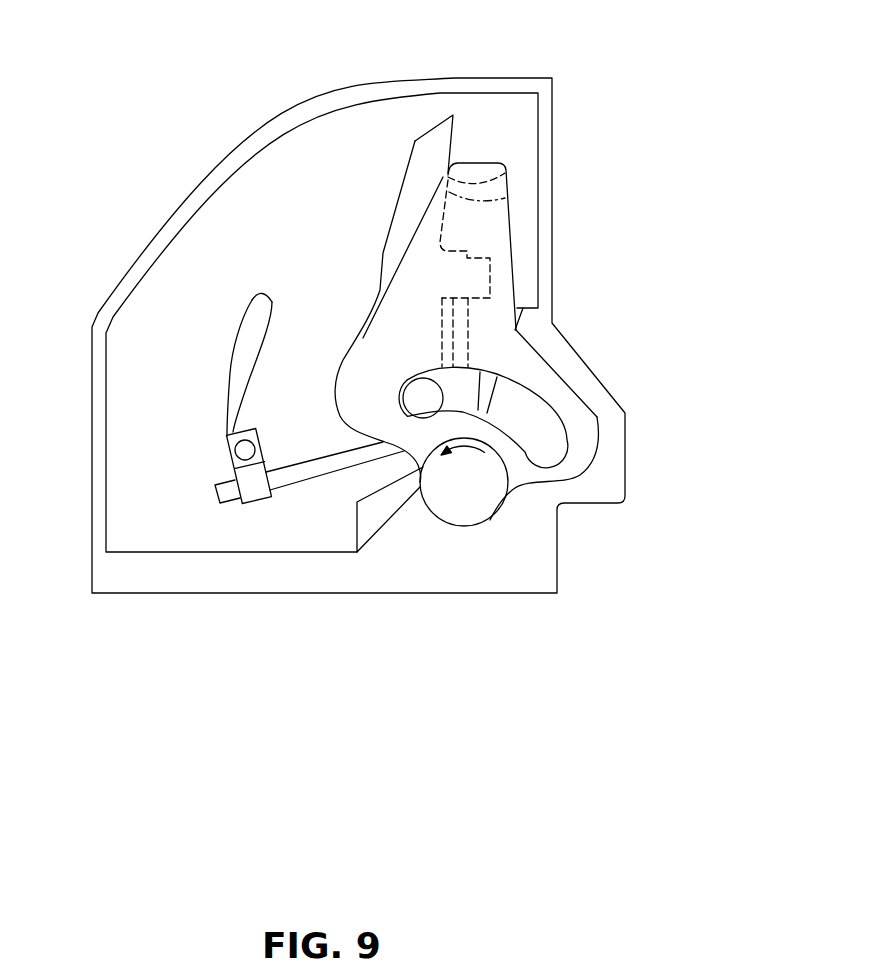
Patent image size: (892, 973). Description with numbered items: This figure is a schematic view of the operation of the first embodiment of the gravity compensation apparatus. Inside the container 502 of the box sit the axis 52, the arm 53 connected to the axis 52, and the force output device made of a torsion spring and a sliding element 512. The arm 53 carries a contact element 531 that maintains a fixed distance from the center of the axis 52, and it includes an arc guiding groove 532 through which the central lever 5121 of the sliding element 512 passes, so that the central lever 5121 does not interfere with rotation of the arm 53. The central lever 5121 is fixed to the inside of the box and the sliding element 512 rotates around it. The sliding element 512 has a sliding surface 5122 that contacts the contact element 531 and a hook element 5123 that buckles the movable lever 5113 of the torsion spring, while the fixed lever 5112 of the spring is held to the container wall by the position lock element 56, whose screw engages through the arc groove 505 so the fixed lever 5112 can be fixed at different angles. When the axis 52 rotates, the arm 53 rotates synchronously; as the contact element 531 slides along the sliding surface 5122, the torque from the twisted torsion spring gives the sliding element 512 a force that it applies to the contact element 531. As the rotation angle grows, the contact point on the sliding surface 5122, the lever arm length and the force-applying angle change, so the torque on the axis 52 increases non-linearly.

The container 502 is at (262, 140).
The arc groove 505 is at (247, 333).
The position lock element 56 is at (252, 478).
The fixed lever 5112 is at (285, 473).
The sliding element 512 is at (422, 150).
The sliding surface 5122 is at (455, 142).
The contact element 531 is at (505, 173).
The movable lever 5113 is at (473, 248).
The hook element 5123 is at (477, 275).
The arm 53 is at (540, 377).
The arc guiding groove 532 is at (548, 430).
The central lever 5121 is at (420, 398).
The axis 52 is at (468, 505).